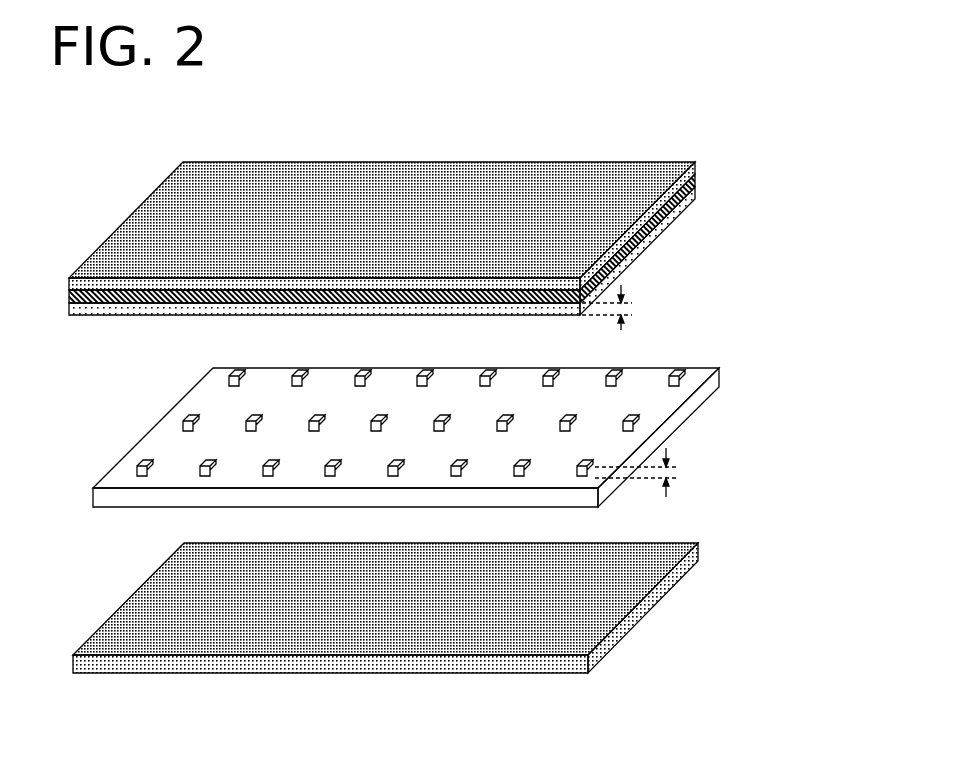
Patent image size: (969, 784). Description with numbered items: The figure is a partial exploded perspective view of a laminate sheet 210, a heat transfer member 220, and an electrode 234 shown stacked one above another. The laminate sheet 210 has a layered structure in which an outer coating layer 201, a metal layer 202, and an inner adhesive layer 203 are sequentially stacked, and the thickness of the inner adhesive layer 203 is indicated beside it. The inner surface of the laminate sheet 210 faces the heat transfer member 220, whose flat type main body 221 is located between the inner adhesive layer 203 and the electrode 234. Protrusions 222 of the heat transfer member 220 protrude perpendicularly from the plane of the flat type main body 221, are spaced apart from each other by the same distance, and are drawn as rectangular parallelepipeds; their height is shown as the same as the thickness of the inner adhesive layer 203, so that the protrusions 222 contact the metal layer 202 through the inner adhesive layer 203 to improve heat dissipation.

The laminate sheet 210 is at (458, 233).
The outer coating layer 201 is at (697, 164).
The metal layer 202 is at (697, 176).
The inner adhesive layer 203 is at (426, 251).
The heat transfer member 220 is at (463, 420).
The flat type main body 221 is at (657, 422).
The protrusions 222 is at (621, 370).
The electrode 234 is at (698, 549).